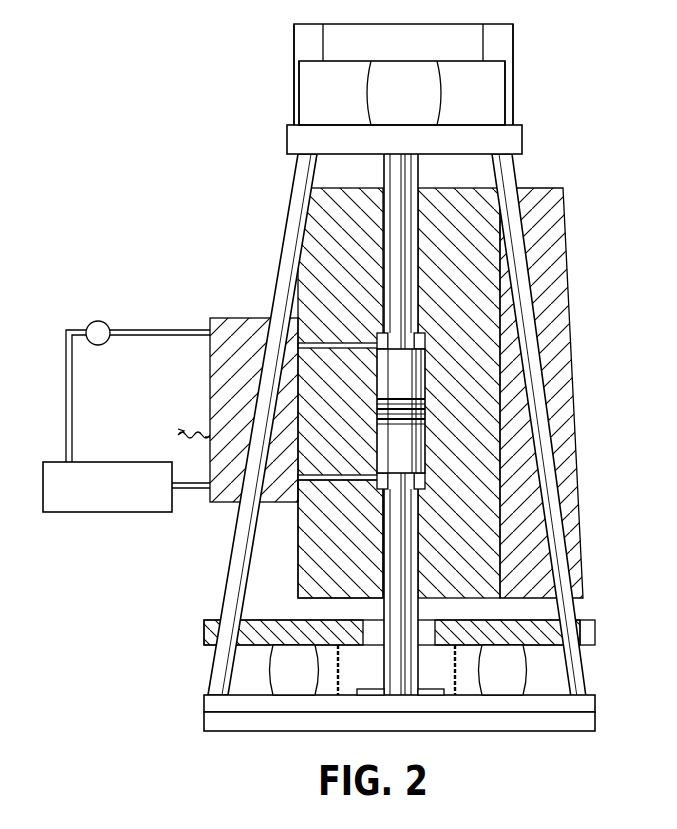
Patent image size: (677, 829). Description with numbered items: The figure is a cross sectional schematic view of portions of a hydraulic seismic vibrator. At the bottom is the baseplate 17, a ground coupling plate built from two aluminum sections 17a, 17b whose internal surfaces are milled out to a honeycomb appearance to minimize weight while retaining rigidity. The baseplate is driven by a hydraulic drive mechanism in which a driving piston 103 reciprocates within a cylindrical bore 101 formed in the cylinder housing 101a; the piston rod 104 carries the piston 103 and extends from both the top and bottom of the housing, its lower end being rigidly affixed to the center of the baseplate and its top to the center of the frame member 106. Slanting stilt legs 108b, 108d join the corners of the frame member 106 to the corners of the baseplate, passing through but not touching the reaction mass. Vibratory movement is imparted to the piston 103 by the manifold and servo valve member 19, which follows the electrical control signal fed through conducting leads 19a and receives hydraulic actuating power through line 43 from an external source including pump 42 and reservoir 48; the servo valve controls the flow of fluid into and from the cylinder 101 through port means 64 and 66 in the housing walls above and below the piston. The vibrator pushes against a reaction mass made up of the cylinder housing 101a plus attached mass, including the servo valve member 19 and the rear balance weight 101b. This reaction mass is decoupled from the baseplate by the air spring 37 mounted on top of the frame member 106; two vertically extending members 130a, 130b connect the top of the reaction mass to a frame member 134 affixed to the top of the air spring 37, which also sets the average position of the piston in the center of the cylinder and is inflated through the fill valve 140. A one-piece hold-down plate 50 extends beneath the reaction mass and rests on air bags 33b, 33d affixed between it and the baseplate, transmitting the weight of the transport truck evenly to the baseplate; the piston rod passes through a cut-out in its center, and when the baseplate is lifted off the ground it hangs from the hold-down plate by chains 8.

The frame member 134 is at (420, 22).
The vertically extending member 130a is at (292, 82).
The vertically extending member 130b is at (514, 92).
The fill valve 140 is at (365, 104).
The air spring 37 is at (443, 95).
The frame member 106 is at (523, 138).
The stilt leg 108b is at (296, 171).
The stilt leg 108d is at (513, 177).
The piston rod 104 is at (420, 172).
The cylinder housing 101a is at (491, 300).
The rear balance weight 101b is at (569, 272).
The cylindrical bore 101 is at (425, 482).
The port means 64 is at (360, 343).
The port means 66 is at (360, 475).
The driving piston 103 is at (420, 443).
The manifold and servo valve member 19 is at (250, 318).
The conducting leads 19a is at (197, 433).
The pump 42 is at (97, 321).
The line 43 is at (170, 330).
The reservoir 48 is at (95, 462).
The hold-down plate 50 is at (596, 628).
The air bag 33b is at (268, 667).
The air bag 33d is at (530, 665).
The chains 8 is at (340, 672).
The baseplate 17 is at (440, 726).
The baseplate section 17a is at (597, 702).
The baseplate section 17b is at (545, 735).